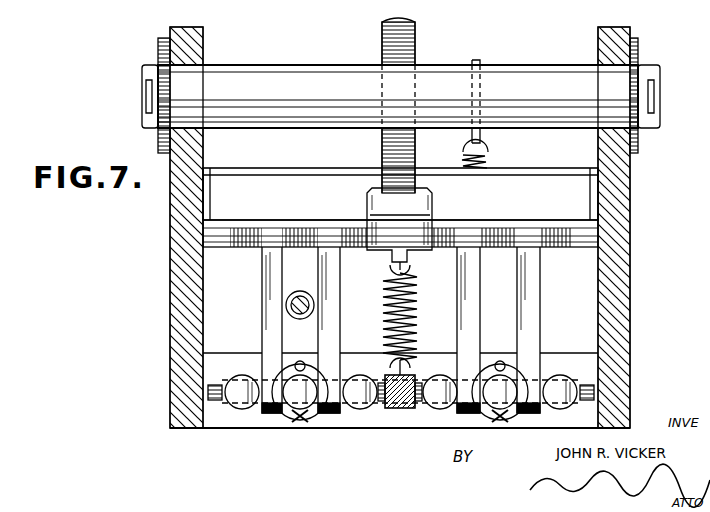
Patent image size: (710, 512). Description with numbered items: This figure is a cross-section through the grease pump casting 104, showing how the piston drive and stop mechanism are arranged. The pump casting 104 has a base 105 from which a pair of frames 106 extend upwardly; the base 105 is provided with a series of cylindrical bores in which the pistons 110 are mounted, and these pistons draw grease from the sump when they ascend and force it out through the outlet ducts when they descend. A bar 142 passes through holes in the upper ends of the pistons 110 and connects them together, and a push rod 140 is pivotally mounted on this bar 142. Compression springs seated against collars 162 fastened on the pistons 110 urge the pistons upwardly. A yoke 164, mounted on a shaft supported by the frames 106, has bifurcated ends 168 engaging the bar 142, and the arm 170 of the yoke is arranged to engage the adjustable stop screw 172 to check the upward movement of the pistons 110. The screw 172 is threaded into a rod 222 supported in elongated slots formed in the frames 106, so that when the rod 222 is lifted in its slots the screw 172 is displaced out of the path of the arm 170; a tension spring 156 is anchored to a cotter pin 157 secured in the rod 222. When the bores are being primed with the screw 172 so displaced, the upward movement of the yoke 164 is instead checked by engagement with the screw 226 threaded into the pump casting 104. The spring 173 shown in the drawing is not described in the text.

The pump casting 104 is at (632, 213).
The base 105 is at (255, 429).
The frames 106 is at (188, 313).
The pistons 110 is at (303, 390).
The push rod 140 is at (397, 409).
The bar 142 is at (212, 391).
The tension spring 156 is at (463, 160).
The cotter pin 157 is at (481, 136).
The collars 162 is at (293, 418).
The yoke 164 is at (297, 178).
The bifurcated ends 168 is at (335, 413).
The arm 170 is at (433, 218).
The adjustable stop screw 172 is at (416, 42).
The tension spring 173 is at (383, 322).
The rod 222 is at (317, 78).
The screw 226 is at (300, 291).